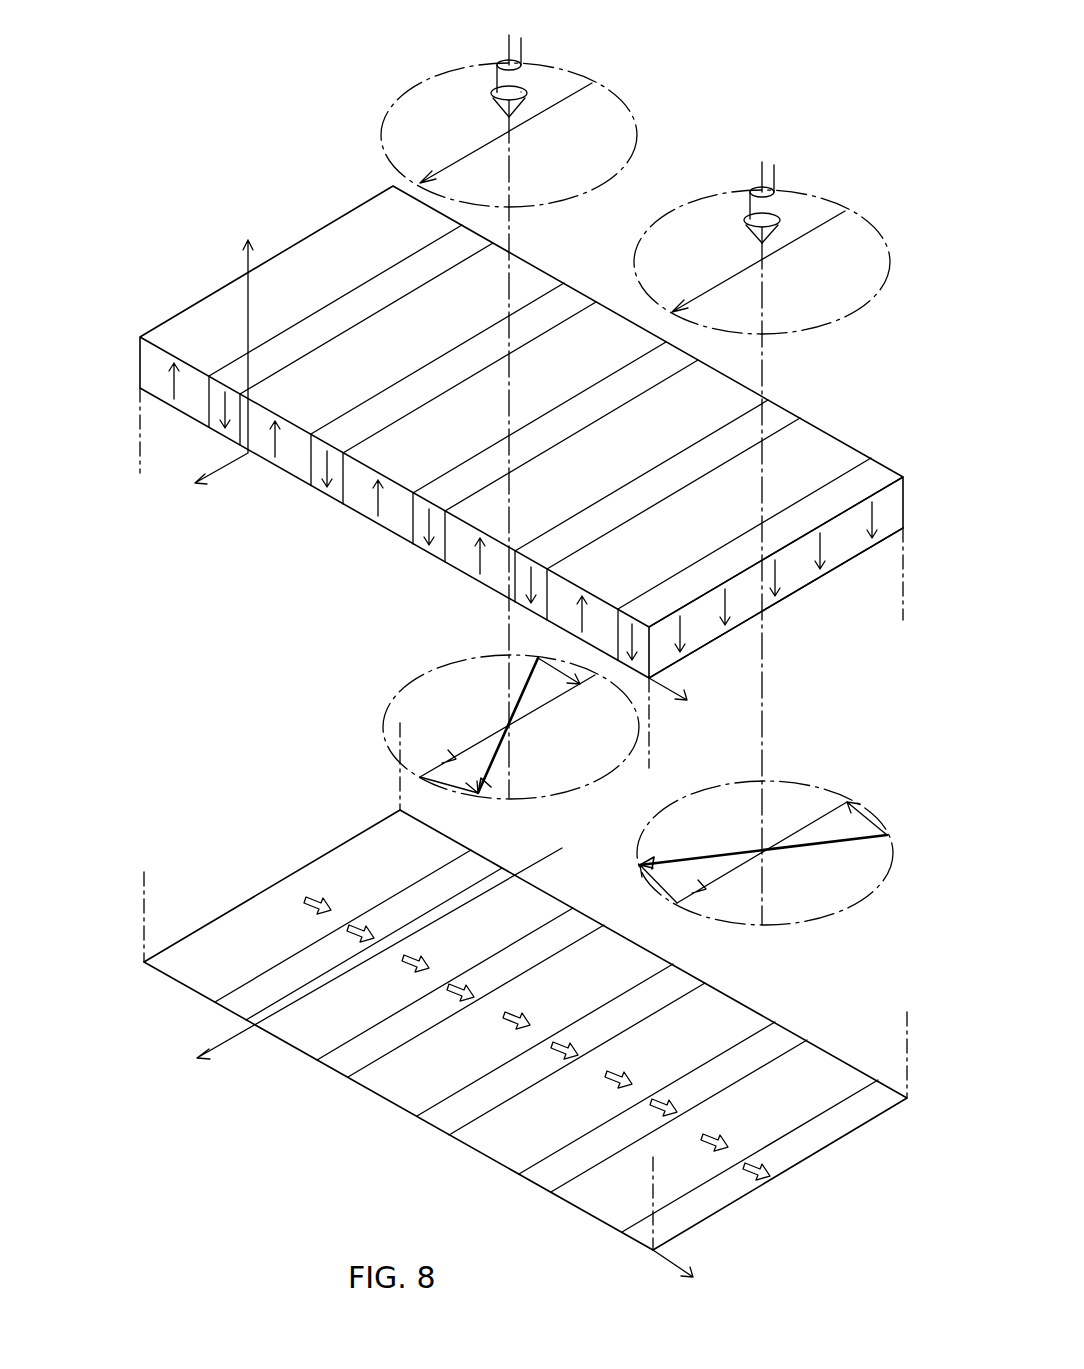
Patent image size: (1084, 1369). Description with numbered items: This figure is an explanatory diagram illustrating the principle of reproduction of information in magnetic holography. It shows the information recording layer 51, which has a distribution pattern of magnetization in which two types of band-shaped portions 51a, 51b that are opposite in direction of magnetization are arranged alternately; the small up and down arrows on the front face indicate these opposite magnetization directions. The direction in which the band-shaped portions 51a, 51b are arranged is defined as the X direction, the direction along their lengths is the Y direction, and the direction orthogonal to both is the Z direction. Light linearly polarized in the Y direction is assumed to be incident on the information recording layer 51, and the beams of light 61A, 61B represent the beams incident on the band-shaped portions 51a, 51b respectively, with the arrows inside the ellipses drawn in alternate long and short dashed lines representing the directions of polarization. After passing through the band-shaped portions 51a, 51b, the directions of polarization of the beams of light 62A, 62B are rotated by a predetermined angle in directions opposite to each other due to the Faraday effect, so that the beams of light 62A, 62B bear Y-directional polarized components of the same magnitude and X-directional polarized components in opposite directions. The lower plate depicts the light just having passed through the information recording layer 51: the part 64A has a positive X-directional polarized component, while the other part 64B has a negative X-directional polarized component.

The information recording layer 51 is at (160, 310).
The band-shaped portion 51a is at (358, 512).
The band-shaped portion 51b is at (803, 588).
The beam of light 61A is at (545, 68).
The beam of light 61B is at (812, 196).
The beam of light 62A is at (402, 690).
The beam of light 62B is at (815, 787).
The part of the beams of light 64A is at (382, 1097).
The part of the beams of light 64B is at (640, 1243).